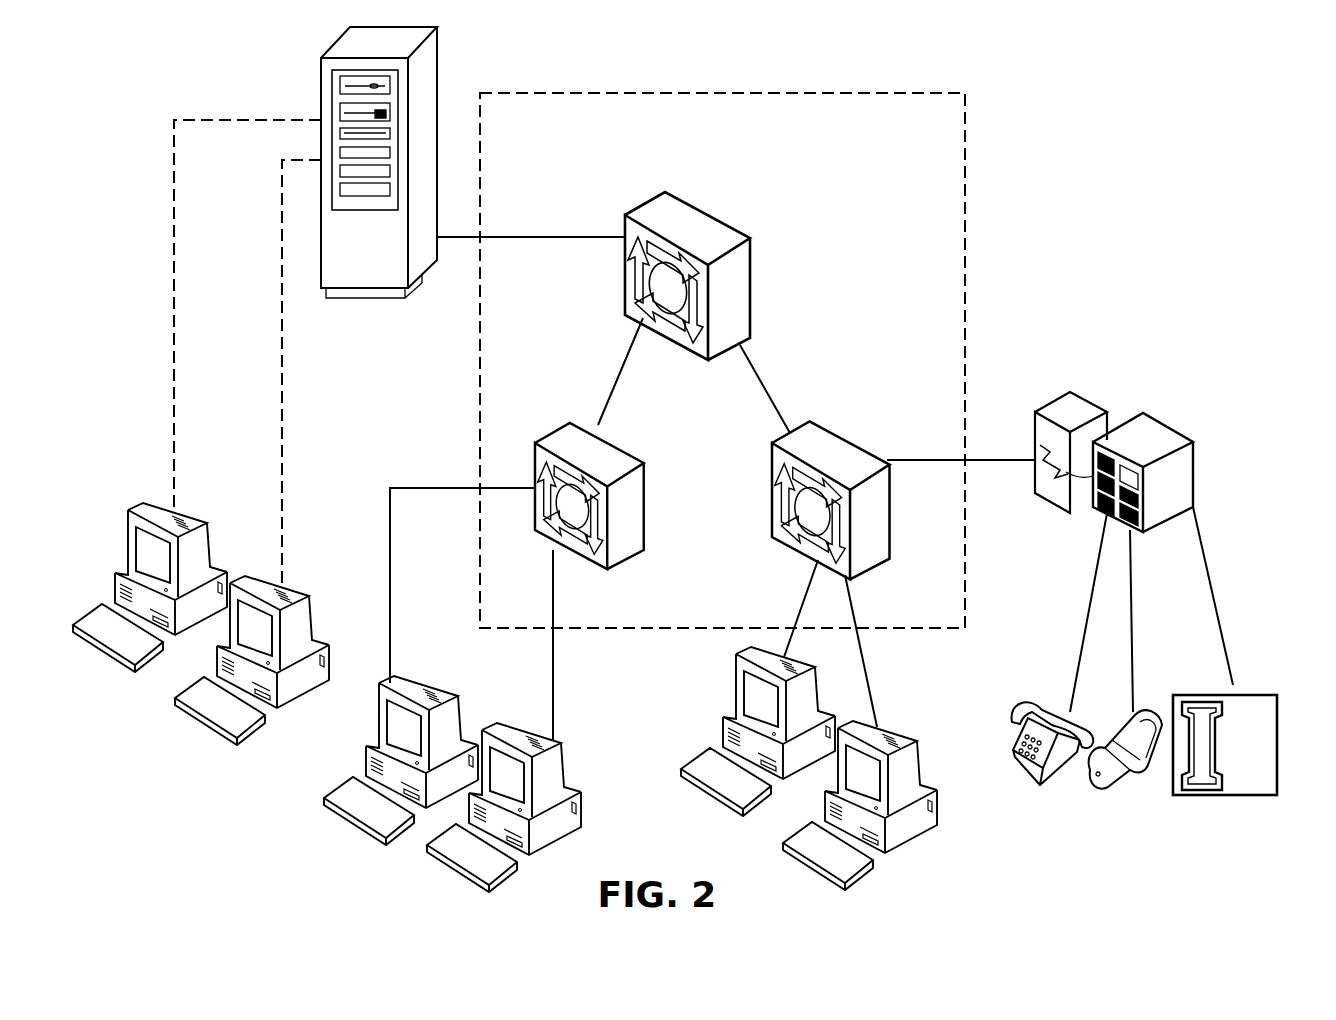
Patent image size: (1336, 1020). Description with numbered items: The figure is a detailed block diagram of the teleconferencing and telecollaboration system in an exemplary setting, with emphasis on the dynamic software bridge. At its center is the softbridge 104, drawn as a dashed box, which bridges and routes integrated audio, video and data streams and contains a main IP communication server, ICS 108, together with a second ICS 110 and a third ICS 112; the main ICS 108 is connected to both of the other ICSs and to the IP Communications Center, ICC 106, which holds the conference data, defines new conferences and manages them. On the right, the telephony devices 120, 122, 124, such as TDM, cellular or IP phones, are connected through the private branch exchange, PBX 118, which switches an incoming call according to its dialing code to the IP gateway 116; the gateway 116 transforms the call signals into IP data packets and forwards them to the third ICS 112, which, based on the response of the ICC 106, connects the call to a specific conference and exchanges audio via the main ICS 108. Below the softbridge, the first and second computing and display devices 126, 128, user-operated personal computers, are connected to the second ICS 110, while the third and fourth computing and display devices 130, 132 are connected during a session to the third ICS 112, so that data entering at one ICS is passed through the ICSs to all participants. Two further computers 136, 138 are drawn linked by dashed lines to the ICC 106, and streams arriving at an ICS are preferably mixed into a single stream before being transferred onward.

The softbridge 104 is at (717, 92).
The IP Communications Center (ICC) 106 is at (438, 80).
The main IP communication server (ICS) 108 is at (705, 207).
The second IP communication server (ICS) 110 is at (598, 449).
The third IP communication server (ICS) 112 is at (812, 561).
The IP gateway device 116 is at (1038, 411).
The private branch exchange (PBX) 118 is at (1194, 480).
The telephony device 120 is at (1278, 718).
The telephony device 122 is at (1112, 783).
The telephony device 124 is at (1008, 753).
The first computing and display device 126 is at (572, 785).
The second computing and display device 128 is at (430, 683).
The third computing and display device 130 is at (900, 732).
The fourth computing and display device 132 is at (800, 660).
The computer 136 is at (293, 585).
The computer 138 is at (193, 513).